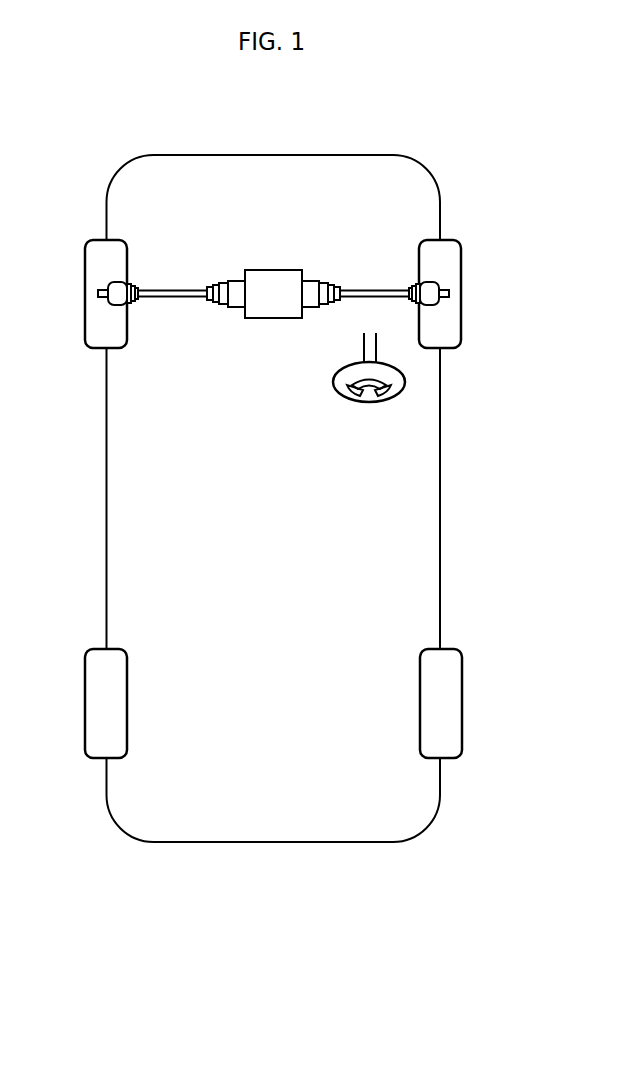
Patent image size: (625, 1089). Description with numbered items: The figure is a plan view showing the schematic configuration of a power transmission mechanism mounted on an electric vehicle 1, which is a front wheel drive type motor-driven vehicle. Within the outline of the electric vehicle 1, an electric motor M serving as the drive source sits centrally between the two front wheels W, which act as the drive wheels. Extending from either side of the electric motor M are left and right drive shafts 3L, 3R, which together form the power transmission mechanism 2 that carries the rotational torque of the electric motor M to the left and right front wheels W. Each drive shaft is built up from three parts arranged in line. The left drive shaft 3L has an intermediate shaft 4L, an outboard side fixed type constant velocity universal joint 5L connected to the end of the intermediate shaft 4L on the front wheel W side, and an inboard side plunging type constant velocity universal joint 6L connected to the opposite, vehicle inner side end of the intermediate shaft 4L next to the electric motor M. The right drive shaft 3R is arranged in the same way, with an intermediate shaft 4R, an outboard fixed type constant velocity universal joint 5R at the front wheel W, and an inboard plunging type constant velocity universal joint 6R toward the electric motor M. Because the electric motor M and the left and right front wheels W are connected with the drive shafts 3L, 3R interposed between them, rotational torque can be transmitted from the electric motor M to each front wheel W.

The electric vehicle 1 is at (508, 192).
The power transmission mechanism 2 is at (272, 285).
The left drive shaft 3L is at (139, 285).
The right drive shaft 3R is at (404, 286).
The left intermediate shaft 4L is at (160, 298).
The right intermediate shaft 4R is at (387, 300).
The left outboard side fixed type constant velocity universal joint 5L is at (113, 305).
The right outboard side fixed type constant velocity universal joint 5R is at (437, 303).
The left inboard side plunging type constant velocity universal joint 6L is at (237, 308).
The right inboard side plunging type constant velocity universal joint 6R is at (308, 315).
The electric motor M is at (274, 283).
The front wheel W is at (100, 272).